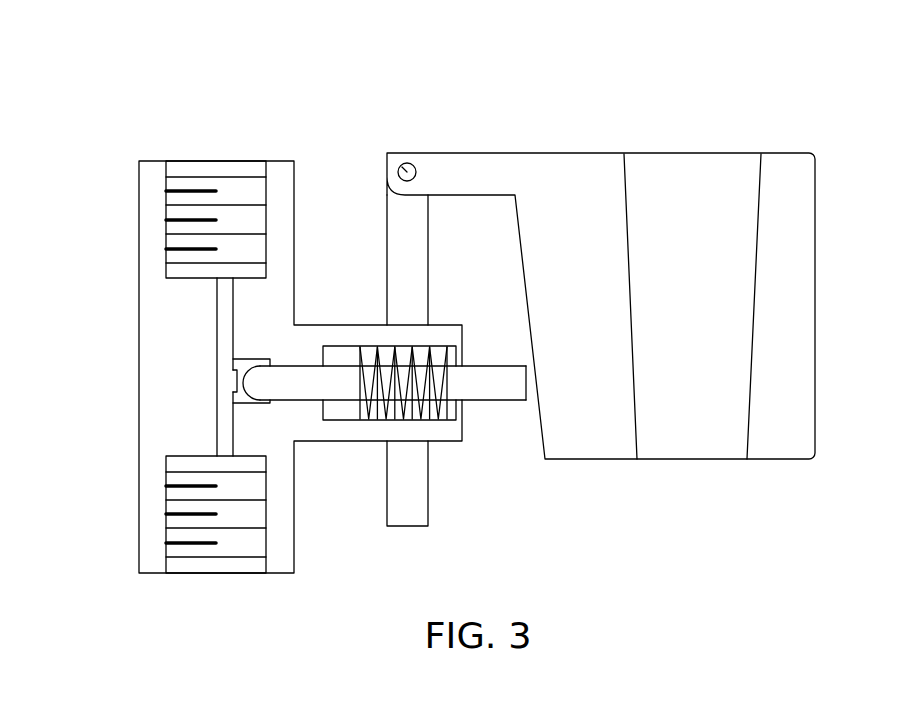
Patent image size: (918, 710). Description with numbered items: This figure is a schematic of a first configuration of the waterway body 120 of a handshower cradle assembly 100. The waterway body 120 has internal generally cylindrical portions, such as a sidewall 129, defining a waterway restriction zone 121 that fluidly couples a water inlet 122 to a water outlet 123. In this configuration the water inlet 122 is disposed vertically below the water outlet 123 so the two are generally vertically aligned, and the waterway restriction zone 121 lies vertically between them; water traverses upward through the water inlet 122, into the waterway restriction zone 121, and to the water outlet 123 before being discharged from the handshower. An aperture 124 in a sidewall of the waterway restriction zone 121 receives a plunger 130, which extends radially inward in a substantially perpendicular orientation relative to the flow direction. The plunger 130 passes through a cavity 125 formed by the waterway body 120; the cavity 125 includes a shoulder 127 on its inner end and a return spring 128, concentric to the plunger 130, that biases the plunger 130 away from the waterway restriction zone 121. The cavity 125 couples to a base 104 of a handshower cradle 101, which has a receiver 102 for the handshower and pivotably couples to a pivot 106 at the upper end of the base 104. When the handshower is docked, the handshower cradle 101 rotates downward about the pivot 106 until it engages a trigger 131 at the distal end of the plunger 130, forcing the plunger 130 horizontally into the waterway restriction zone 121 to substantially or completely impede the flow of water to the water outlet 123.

The handshower cradle assembly 100 is at (281, 70).
The handshower cradle 101 is at (552, 212).
The receiver 102 is at (627, 178).
The base 104 is at (403, 502).
The pivot 106 is at (403, 165).
The waterway body 120 is at (200, 363).
The waterway restriction zone 121 is at (238, 392).
The water inlet 122 is at (242, 520).
The water outlet 123 is at (242, 215).
The aperture 124 is at (285, 360).
The cavity 125 is at (333, 413).
The shoulder 127 is at (340, 357).
The return spring 128 is at (413, 418).
The sidewall 129 is at (233, 383).
The plunger 130 is at (303, 380).
The trigger 131 is at (492, 385).